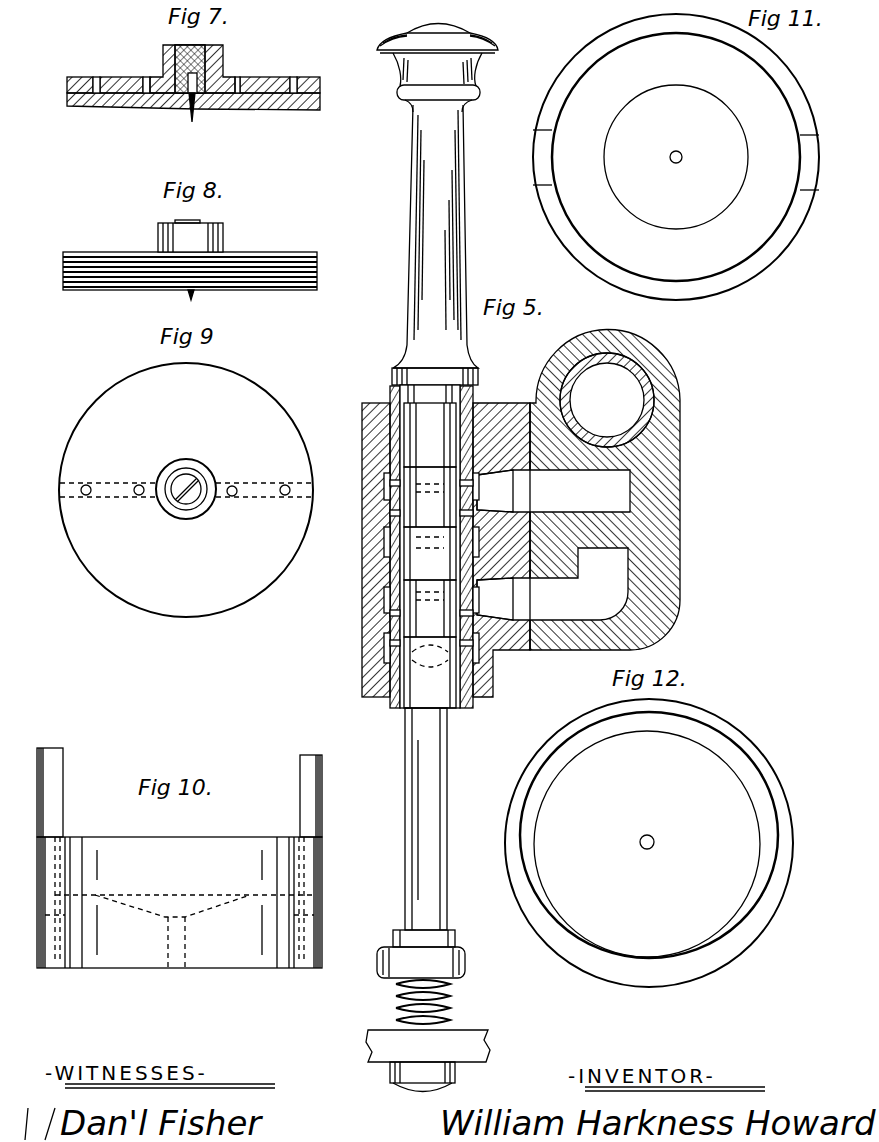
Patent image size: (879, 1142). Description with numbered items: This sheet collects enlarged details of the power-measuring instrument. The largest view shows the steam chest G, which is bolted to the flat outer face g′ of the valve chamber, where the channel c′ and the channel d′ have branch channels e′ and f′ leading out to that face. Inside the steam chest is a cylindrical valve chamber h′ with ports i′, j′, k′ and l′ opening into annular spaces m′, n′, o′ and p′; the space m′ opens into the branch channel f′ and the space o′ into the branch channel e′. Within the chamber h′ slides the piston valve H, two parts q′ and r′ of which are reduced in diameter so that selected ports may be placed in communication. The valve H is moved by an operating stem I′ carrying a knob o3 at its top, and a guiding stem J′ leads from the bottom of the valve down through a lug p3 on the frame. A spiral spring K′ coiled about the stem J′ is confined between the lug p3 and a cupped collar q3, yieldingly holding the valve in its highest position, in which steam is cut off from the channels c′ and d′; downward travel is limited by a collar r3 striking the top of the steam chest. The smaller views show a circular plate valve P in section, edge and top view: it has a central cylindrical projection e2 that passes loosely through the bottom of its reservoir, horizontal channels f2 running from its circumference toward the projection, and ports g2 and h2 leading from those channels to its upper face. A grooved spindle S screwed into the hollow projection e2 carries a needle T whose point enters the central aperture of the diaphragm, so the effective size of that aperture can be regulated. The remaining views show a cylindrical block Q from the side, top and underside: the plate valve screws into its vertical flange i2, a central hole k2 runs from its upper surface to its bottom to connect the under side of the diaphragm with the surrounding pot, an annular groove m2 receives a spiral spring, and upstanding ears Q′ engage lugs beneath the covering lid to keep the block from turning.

In FIG. 7, the circular plate valve P is at (193, 63).
In FIG. 8, the circular plate valve P is at (190, 261).
In FIG. 9, the circular plate valve P is at (186, 490).
In FIG. 7, the horizontal channel f2 is at (187, 96).
In FIG. 7, the port g2 is at (295, 68).
In FIG. 9, the port g2 is at (285, 496).
In FIG. 7, the port h2 is at (250, 68).
In FIG. 9, the port h2 is at (138, 509).
In FIG. 7, the central cylindrical projection e2 is at (228, 78).
In FIG. 8, the central cylindrical projection e2 is at (179, 237).
In FIG. 9, the central cylindrical projection e2 is at (194, 465).
In FIG. 7, the grooved spindle S is at (190, 58).
In FIG. 8, the grooved spindle S is at (195, 213).
In FIG. 9, the grooved spindle S is at (200, 482).
In FIG. 7, the needle T is at (199, 112).
In FIG. 8, the needle T is at (198, 301).
In FIG. 10, the cylindrical block Q is at (179, 902).
In FIG. 11, the cylindrical block Q is at (676, 160).
In FIG. 12, the cylindrical block Q is at (649, 843).
In FIG. 10, the ear Q′ is at (55, 787).
In FIG. 10, the vertical flange i2 is at (40, 850).
In FIG. 11, the vertical flange i2 is at (730, 282).
In FIG. 10, the central hole k2 is at (166, 968).
In FIG. 11, the central hole k2 is at (674, 143).
In FIG. 12, the central hole k2 is at (645, 825).
In FIG. 10, the annular groove m2 is at (47, 968).
In FIG. 12, the annular groove m2 is at (746, 778).
In FIG. 5, the knob o3 is at (444, 68).
In FIG. 5, the operating stem I′ is at (428, 236).
In FIG. 5, the collar r3 is at (444, 364).
In FIG. 5, the cylindrical valve chamber h′ is at (398, 395).
In FIG. 5, the piston valve H is at (430, 435).
In FIG. 5, the reduced part q′ is at (430, 497).
In FIG. 5, the reduced part r′ is at (430, 608).
In FIG. 5, the steam chest G is at (362, 550).
In FIG. 5, the annular space m′ is at (383, 478).
In FIG. 5, the port i′ is at (400, 492).
In FIG. 5, the annular space n′ is at (386, 523).
In FIG. 5, the port j′ is at (400, 542).
In FIG. 5, the annular space o′ is at (383, 597).
In FIG. 5, the port k′ is at (400, 615).
In FIG. 5, the annular space p′ is at (386, 645).
In FIG. 5, the port l′ is at (366, 660).
In FIG. 5, the branch channel f′ is at (512, 491).
In FIG. 5, the channel d′ is at (612, 492).
In FIG. 5, the branch channel e′ is at (515, 599).
In FIG. 5, the channel c′ is at (608, 565).
In FIG. 5, the outer face g′ is at (576, 513).
In FIG. 5, the guiding stem J′ is at (447, 793).
In FIG. 5, the cupped collar q3 is at (433, 952).
In FIG. 5, the spiral spring K′ is at (480, 1012).
In FIG. 5, the lug p3 is at (428, 1061).